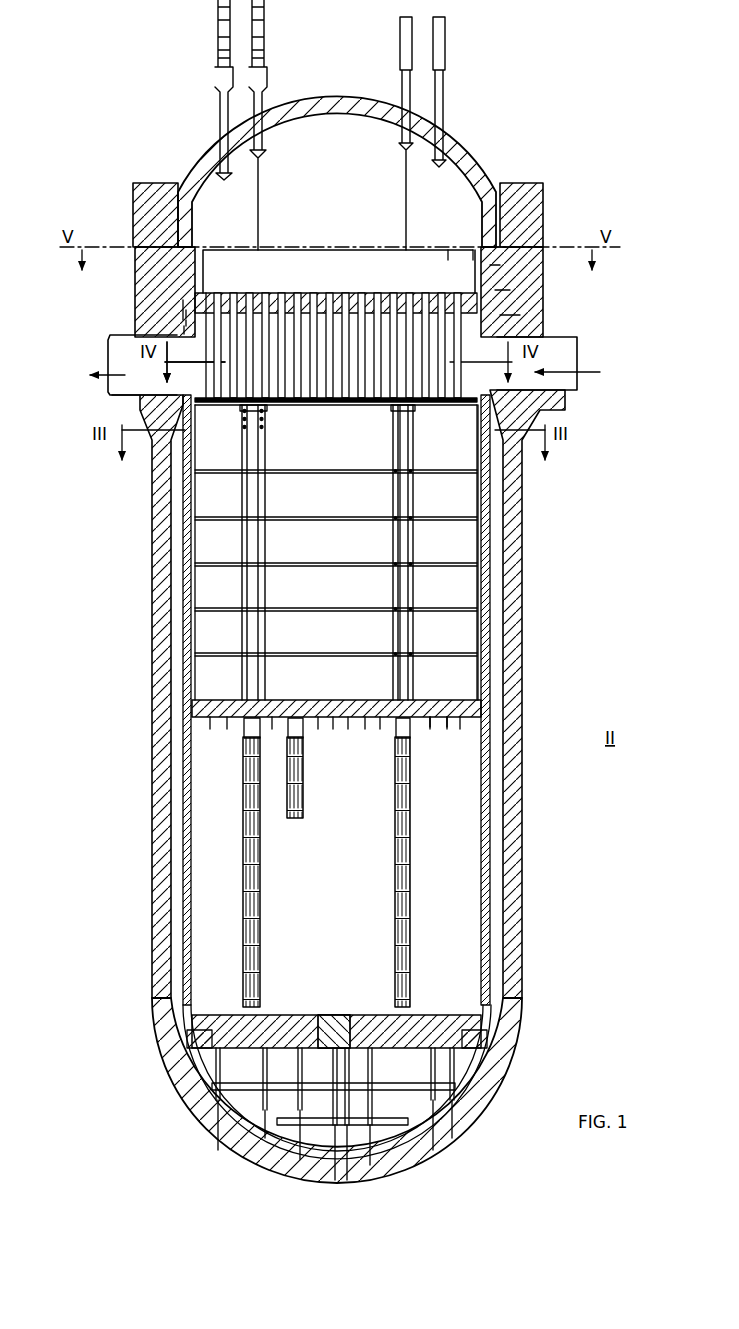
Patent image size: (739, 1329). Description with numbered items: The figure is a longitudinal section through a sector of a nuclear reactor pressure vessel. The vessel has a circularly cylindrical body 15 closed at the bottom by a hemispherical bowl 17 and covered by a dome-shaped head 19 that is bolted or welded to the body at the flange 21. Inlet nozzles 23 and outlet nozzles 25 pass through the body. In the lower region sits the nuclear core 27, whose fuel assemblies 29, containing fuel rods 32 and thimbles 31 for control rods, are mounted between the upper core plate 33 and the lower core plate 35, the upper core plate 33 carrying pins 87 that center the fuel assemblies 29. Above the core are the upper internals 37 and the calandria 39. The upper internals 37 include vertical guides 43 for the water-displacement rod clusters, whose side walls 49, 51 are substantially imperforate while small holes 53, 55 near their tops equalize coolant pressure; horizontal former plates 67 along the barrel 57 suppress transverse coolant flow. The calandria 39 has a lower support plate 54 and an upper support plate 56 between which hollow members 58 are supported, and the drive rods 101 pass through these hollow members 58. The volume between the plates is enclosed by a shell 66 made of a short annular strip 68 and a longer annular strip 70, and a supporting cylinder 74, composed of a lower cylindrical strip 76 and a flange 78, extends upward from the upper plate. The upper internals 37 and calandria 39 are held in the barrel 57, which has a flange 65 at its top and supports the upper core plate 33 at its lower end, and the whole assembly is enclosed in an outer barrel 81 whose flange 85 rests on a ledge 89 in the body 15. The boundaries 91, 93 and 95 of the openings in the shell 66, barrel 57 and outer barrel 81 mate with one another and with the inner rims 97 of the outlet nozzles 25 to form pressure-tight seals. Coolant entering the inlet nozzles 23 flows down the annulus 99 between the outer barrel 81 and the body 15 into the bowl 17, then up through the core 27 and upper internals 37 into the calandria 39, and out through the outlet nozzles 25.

The circularly cylindrical body 15 is at (514, 726).
The hemispherical bowl 17 is at (465, 1115).
The dome-shaped head 19 is at (340, 95).
The flange 21 is at (530, 195).
The inlet nozzles 23 is at (550, 330).
The outlet nozzles 25 is at (138, 405).
The nuclear core 27 is at (254, 862).
The fuel assemblies 29 is at (395, 865).
The thimbles 31 is at (261, 843).
The fuel rods 32 is at (248, 900).
The upper core plate 33 is at (480, 705).
The lower core plate 35 is at (462, 1030).
The upper internals 37 is at (324, 550).
The calandria 39 is at (248, 345).
The vertical guides 43 is at (402, 597).
The vertical side walls 49 is at (250, 530).
The vertical side walls 51 is at (480, 505).
The small holes 53 is at (240, 418).
The lower support plate 54 is at (310, 405).
The small holes 55 is at (412, 410).
The upper support plate 56 is at (318, 300).
The barrel 57 is at (489, 572).
The hollow members 58 is at (232, 315).
The flange 65 is at (135, 250).
The shell 66 is at (525, 312).
The former plates 67 is at (290, 518).
The short annular strip 68 is at (188, 312).
The longer annular strip 70 is at (553, 345).
The supporting cylinder 74 is at (474, 250).
The lower cylindrical strip 76 is at (449, 250).
The flange 78 is at (190, 212).
The outer barrel 81 is at (522, 797).
The flange 85 is at (505, 268).
The pins 87 is at (457, 725).
The ledge 89 is at (512, 290).
The boundaries 91 is at (206, 275).
The boundaries 93 is at (188, 316).
The boundaries 95 is at (188, 321).
The inner rims 97 is at (186, 327).
The annulus 99 is at (496, 657).
The drive rods 101 is at (258, 190).